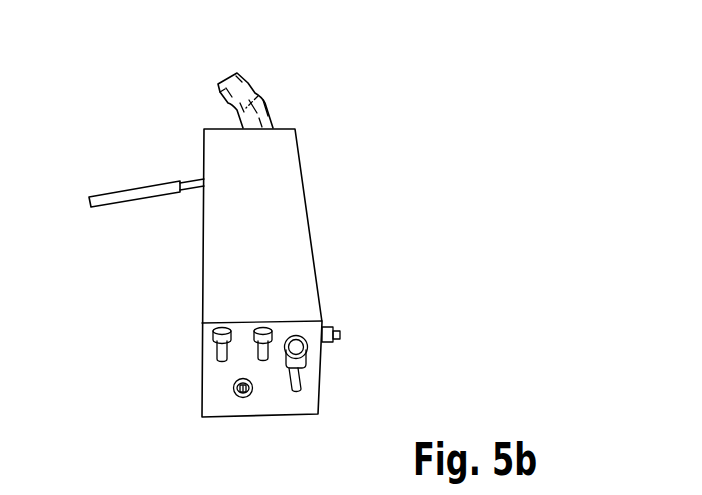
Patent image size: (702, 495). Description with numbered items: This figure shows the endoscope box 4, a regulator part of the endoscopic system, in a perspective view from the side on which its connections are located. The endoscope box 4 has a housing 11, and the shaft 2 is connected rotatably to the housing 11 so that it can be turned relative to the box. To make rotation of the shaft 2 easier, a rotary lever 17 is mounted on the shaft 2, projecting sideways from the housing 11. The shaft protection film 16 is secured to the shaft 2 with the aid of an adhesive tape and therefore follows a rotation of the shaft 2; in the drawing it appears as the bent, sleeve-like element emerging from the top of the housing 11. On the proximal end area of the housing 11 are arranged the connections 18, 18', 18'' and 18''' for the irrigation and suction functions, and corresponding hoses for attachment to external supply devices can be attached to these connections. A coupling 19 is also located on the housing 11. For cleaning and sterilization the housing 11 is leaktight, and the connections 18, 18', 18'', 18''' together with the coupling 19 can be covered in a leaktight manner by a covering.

The shaft 2 is at (259, 96).
The endoscope box 4 is at (378, 220).
The housing 11 is at (223, 253).
The shaft protection film 16 is at (252, 86).
The rotary lever 17 is at (122, 195).
The connection 18 is at (191, 348).
The connection 18' is at (244, 422).
The connection 18'' is at (316, 319).
The connection 18''' is at (336, 365).
The coupling 19 is at (343, 333).